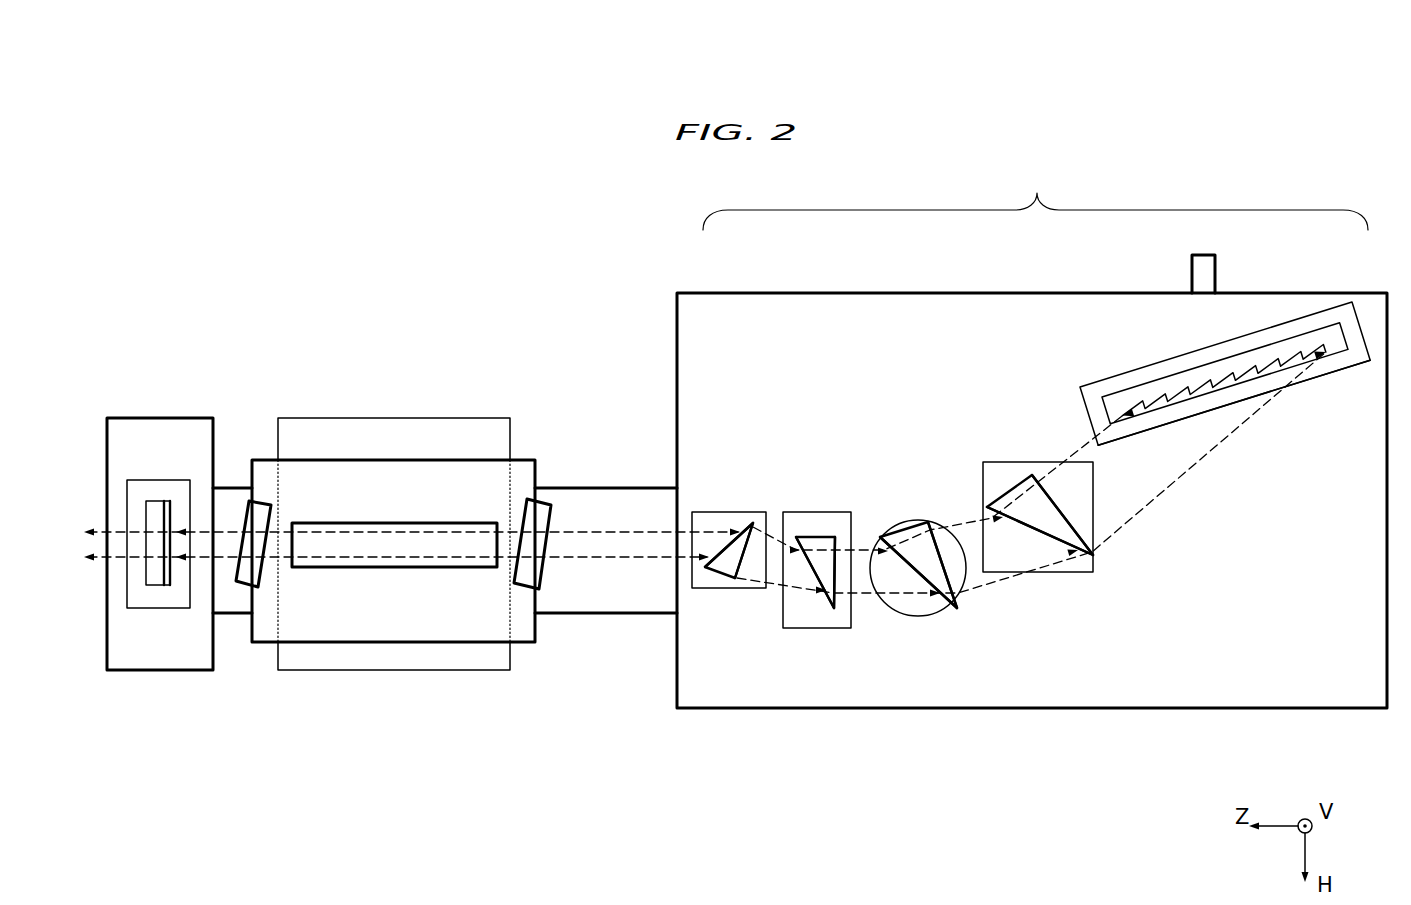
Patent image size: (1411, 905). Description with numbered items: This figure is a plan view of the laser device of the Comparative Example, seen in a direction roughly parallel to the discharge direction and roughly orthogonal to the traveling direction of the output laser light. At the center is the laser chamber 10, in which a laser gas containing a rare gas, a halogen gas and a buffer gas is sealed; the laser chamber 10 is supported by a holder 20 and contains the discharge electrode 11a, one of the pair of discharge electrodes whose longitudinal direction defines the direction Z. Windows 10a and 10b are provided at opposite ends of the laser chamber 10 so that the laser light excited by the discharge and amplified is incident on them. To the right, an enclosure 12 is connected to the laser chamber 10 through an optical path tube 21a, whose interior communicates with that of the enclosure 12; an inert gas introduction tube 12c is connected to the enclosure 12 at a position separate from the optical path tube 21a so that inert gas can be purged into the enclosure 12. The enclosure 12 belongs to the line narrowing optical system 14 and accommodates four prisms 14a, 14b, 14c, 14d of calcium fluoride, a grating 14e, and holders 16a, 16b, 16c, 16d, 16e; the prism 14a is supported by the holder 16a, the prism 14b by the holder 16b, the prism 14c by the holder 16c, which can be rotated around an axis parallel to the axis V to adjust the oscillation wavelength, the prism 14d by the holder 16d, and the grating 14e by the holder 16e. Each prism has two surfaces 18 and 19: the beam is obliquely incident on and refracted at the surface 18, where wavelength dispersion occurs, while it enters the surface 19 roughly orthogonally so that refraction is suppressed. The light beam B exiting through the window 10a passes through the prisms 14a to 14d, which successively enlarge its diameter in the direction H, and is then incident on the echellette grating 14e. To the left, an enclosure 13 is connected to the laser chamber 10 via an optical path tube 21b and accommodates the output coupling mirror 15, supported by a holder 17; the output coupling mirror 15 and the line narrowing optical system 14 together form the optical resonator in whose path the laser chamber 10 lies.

The laser chamber 10 is at (308, 460).
The window 10a is at (514, 570).
The window 10b is at (271, 511).
The discharge electrode 11a is at (381, 511).
The enclosure 12 is at (688, 293).
The inert gas introduction tube 12c is at (1215, 280).
The enclosure 13 is at (168, 417).
The line narrowing optical system 14 is at (1039, 459).
The prism 14a is at (757, 520).
The prism 14b is at (823, 535).
The prism 14c is at (902, 520).
The prism 14d is at (1032, 474).
The grating 14e is at (1122, 386).
The output coupling mirror 15 is at (156, 585).
The holder 16a is at (730, 590).
The holder 16b is at (831, 628).
The holder 16c is at (899, 614).
The holder 16d is at (1069, 575).
The holder 16e is at (1254, 396).
The holder 17 is at (139, 608).
The surface 18 is at (752, 523).
The surface 19 is at (755, 525).
The holder 20 is at (387, 670).
The optical path tube 21a is at (578, 616).
The optical path tube 21b is at (238, 616).
The light beam B is at (633, 558).